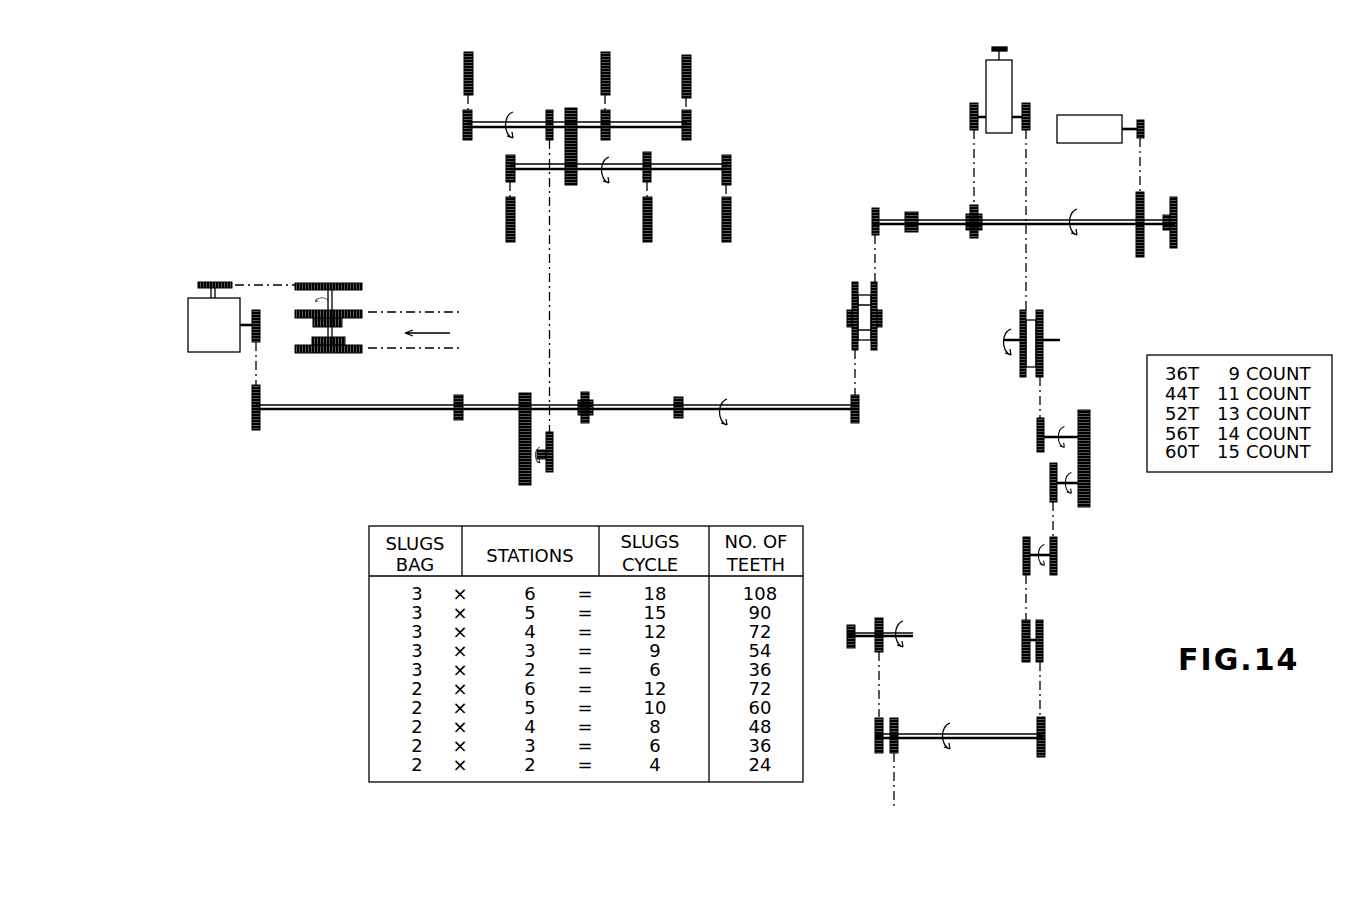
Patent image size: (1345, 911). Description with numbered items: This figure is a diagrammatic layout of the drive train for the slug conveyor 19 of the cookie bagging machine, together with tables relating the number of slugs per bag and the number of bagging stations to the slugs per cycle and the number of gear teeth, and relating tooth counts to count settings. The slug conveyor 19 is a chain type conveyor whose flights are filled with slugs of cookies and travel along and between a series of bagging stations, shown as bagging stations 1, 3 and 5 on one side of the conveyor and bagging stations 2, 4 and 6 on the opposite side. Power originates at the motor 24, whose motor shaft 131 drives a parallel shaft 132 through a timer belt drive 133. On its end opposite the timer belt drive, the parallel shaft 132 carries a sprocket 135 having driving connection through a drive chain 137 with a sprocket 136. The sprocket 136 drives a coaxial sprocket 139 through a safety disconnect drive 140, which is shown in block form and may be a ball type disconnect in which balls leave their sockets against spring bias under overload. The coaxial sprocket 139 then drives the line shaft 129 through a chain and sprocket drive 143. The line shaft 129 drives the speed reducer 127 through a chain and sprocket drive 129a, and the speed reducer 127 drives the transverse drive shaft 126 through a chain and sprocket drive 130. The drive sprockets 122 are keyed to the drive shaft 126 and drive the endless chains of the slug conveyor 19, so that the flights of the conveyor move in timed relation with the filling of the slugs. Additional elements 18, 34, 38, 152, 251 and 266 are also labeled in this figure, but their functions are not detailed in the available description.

The bagging station 1 is at (728, 210).
The bagging station 2 is at (686, 85).
The bagging station 3 is at (646, 224).
The bagging station 4 is at (605, 85).
The bagging station 5 is at (509, 210).
The bagging station 6 is at (467, 85).
The drive shaft 18 is at (913, 635).
The slug conveyor 19 is at (432, 312).
The motor 24 is at (1092, 115).
The motor 34 is at (1005, 70).
The gear 38 is at (1085, 507).
The drive sprockets 122 is at (362, 313).
The drive shaft 126 is at (340, 300).
The speed reducer 127 is at (200, 348).
The line shaft 129 is at (770, 405).
The chain and sprocket drive 129a is at (253, 385).
The chain and sprocket drive 130 is at (295, 285).
The motor shaft 131 is at (1140, 120).
The parallel shaft 132 is at (1097, 218).
The timer belt drive 133 is at (1143, 178).
The sprocket 135 is at (873, 207).
The sprocket 136 is at (877, 350).
The drive chain 137 is at (878, 272).
The coaxial sprocket 139 is at (853, 282).
The safety disconnect drive 140 is at (860, 345).
The chain and sprocket drive 143 is at (853, 362).
The gear 152 is at (519, 480).
The gear 251 is at (521, 393).
The pinion 266 is at (553, 470).